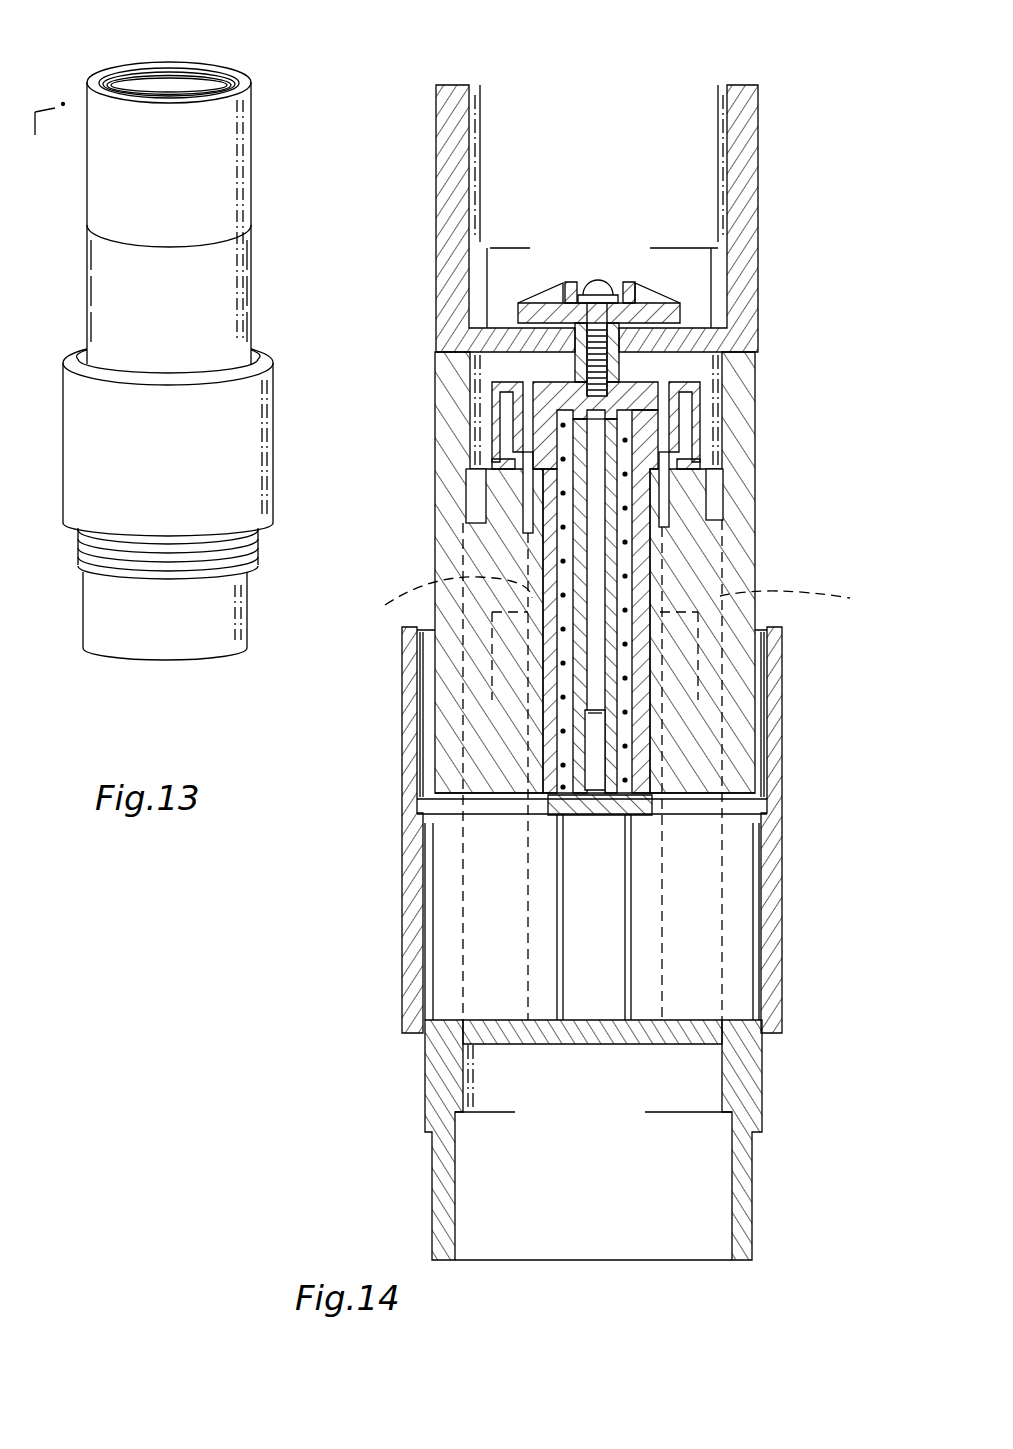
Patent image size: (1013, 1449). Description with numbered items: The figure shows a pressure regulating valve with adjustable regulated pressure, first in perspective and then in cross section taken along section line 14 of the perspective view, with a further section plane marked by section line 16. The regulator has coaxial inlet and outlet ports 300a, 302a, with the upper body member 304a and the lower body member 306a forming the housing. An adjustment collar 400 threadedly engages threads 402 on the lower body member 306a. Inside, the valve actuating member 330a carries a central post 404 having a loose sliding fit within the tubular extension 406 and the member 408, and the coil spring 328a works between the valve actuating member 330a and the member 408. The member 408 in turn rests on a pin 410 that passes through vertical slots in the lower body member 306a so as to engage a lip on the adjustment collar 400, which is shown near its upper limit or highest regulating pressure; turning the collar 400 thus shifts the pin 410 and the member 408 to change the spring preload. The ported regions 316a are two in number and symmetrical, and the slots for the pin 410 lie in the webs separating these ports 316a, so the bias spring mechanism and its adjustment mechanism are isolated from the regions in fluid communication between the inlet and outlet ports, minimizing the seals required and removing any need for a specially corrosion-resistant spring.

In FIG. 13, the section line 14- 14 is at (296, 30).
In FIG. 14, the section line 16- 16 is at (379, 570).
In FIG. 13, the inlet port 300a is at (183, 655).
In FIG. 14, the inlet port 300a is at (592, 1250).
In FIG. 13, the outlet port 302a is at (172, 66).
In FIG. 14, the outlet port 302a is at (716, 110).
In FIG. 13, the upper body member 304a is at (243, 158).
In FIG. 14, the upper body member 304a is at (758, 235).
In FIG. 13, the lower body member 306a is at (243, 270).
In FIG. 14, the lower body member 306a is at (758, 445).
In FIG. 14, the ported regions 316a is at (615, 598).
In FIG. 14, the coil spring 328a is at (565, 663).
In FIG. 14, the valve actuating member 330a is at (553, 397).
In FIG. 13, the adjustment collar 400 is at (262, 447).
In FIG. 14, the adjustment collar 400 is at (785, 760).
In FIG. 13, the threads 402 is at (78, 555).
In FIG. 14, the central post 404 is at (598, 665).
In FIG. 14, the tubular extension 406 is at (578, 723).
In FIG. 14, the member 408 is at (588, 800).
In FIG. 14, the pin 410 is at (492, 810).